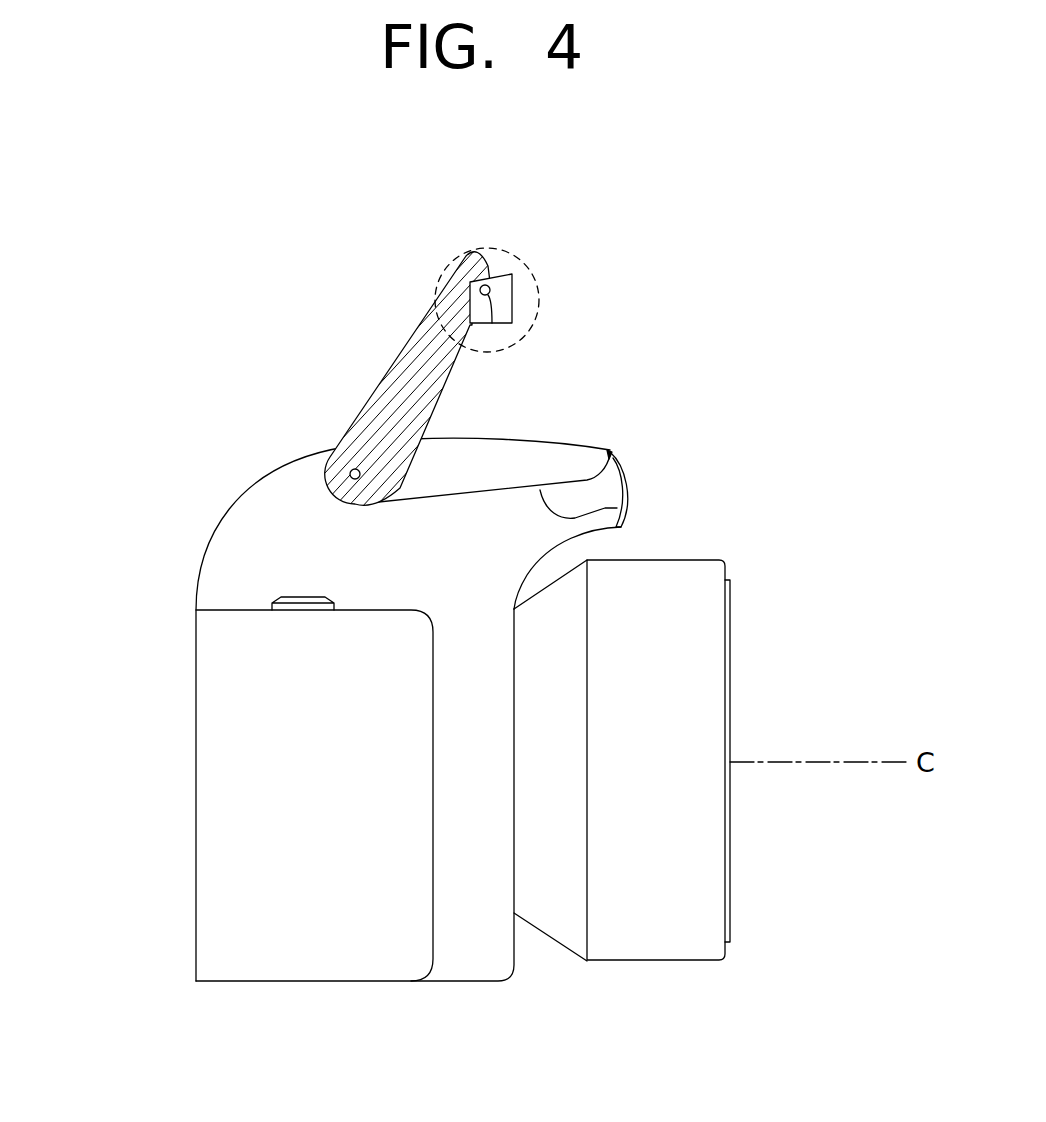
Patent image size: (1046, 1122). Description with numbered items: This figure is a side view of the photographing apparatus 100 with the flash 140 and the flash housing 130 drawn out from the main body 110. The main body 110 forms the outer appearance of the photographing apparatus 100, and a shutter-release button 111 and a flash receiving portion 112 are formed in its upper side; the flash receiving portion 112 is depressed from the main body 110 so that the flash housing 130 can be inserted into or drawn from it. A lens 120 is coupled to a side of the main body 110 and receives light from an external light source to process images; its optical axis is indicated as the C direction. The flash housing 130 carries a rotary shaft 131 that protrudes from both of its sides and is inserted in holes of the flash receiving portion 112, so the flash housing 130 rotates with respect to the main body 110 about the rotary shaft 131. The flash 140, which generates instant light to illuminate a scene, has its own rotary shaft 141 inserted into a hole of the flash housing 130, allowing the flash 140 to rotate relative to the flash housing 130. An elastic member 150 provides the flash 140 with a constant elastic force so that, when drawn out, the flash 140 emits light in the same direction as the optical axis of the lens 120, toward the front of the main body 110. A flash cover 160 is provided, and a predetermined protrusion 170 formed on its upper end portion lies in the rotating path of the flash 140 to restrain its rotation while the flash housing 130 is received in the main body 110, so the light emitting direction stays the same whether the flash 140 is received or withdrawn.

The photographing apparatus 100 is at (152, 406).
The main body 110 is at (207, 820).
The shutter-release button 111 is at (277, 602).
The flash receiving portion 112 is at (513, 463).
The lens 120 is at (703, 651).
The flash housing 130 is at (405, 355).
The rotary shaft 131 is at (345, 466).
The flash 140 is at (508, 317).
The rotary shaft 141 is at (494, 288).
The elastic member 150 is at (488, 274).
The flash cover 160 is at (628, 487).
The predetermined protrusion 170 is at (613, 453).